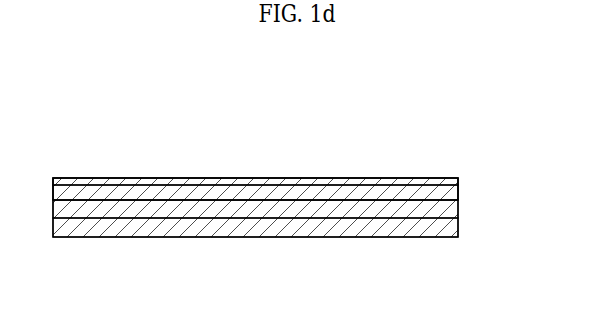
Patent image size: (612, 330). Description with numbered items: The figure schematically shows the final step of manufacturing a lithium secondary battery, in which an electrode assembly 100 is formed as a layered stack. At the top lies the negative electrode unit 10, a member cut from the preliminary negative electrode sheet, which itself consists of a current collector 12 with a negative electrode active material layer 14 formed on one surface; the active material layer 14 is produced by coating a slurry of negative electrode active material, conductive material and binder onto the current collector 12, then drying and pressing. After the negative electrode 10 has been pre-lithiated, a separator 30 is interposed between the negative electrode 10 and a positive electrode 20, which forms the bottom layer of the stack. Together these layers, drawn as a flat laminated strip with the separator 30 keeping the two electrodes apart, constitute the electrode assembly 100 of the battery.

The electrode assembly 100 is at (123, 133).
The negative electrode unit 10 is at (507, 153).
The current collector 12 is at (458, 181).
The negative electrode active material layer 14 is at (459, 189).
The separator 30 is at (459, 210).
The positive electrode 20 is at (459, 238).